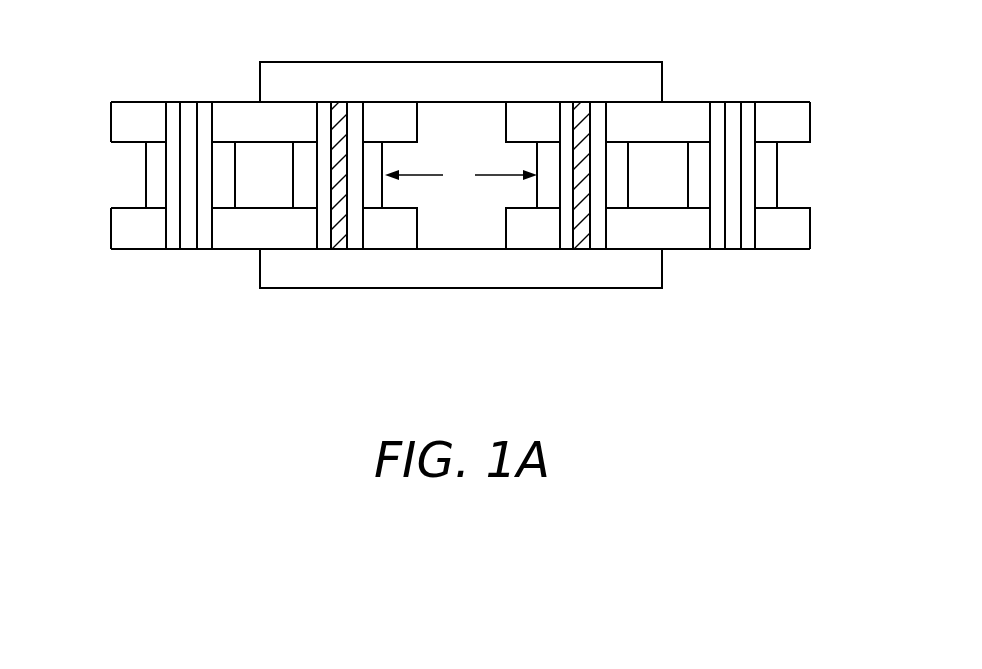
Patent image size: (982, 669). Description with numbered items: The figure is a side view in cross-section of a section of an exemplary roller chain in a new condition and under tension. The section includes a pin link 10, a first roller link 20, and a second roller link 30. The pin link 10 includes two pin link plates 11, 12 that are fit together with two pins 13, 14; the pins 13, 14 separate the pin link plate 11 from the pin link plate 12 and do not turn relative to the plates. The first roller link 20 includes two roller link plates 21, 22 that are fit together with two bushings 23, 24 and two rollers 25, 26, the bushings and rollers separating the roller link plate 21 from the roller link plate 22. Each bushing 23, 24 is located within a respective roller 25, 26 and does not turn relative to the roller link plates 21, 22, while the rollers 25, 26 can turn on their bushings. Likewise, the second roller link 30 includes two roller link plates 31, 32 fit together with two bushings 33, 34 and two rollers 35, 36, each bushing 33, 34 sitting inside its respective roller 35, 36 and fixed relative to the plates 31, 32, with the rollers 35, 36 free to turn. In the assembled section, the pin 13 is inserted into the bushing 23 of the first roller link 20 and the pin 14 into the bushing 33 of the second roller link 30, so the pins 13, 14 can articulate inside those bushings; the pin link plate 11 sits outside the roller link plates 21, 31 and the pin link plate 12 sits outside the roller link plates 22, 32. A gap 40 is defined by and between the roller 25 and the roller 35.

The pin link 10 is at (610, 349).
The pin link plate 11 is at (455, 62).
The pin link plate 12 is at (455, 288).
The pin 13 is at (342, 108).
The pin 14 is at (583, 107).
The first roller link 20 is at (187, 176).
The roller link plate 21 is at (110, 123).
The roller link plate 22 is at (110, 227).
The bushing 23 is at (317, 193).
The bushing 24 is at (212, 178).
The roller 25 is at (291, 158).
The roller 26 is at (150, 174).
The second roller link 30 is at (680, 178).
The roller link plate 31 is at (811, 119).
The roller link plate 32 is at (811, 227).
The bushing 33 is at (560, 178).
The bushing 34 is at (708, 195).
The roller 35 is at (537, 157).
The roller 36 is at (773, 175).
The gap 40 is at (461, 175).